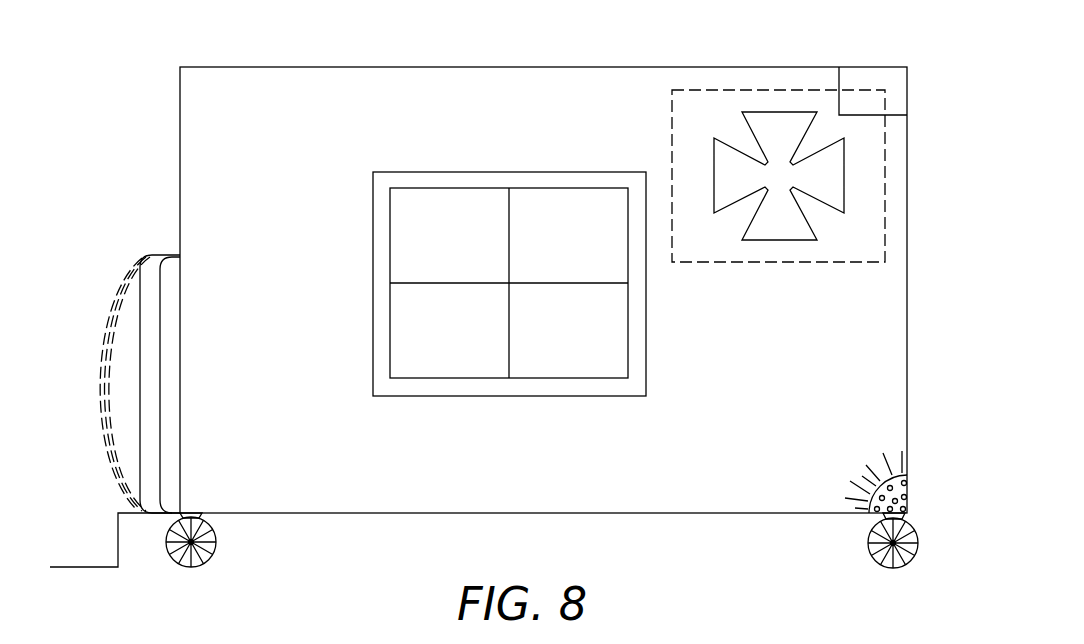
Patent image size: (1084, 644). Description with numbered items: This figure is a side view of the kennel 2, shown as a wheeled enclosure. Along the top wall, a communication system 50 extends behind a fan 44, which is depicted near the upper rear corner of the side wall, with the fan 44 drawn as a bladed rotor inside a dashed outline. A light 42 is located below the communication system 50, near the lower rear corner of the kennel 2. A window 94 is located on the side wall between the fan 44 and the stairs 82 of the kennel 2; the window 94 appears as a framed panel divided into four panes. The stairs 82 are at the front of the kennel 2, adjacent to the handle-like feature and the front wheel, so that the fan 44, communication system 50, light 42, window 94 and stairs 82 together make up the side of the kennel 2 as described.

The kennel 2 is at (172, 58).
The light 42 is at (908, 497).
The fan 44 is at (886, 233).
The communication system 50 is at (898, 79).
The stairs 82 is at (93, 539).
The window 94 is at (373, 232).